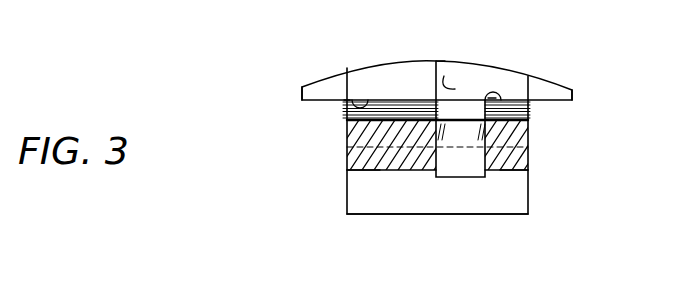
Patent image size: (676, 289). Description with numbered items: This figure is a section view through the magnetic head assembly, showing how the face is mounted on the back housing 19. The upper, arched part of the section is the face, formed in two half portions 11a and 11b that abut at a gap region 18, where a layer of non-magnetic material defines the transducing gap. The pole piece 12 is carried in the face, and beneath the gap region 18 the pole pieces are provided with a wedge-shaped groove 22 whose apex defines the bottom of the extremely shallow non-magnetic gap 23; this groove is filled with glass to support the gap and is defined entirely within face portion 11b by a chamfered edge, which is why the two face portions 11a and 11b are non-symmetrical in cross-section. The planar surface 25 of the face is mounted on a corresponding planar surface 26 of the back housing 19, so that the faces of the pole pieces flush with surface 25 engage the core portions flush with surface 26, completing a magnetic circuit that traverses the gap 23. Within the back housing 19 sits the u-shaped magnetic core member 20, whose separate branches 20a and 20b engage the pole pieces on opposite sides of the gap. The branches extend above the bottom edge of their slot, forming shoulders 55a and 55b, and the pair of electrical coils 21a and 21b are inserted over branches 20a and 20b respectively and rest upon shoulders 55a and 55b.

The face half portion 11a is at (302, 100).
The face half portion 11b is at (573, 100).
The pole piece 12 is at (360, 73).
The gap region 18 is at (429, 77).
The back housing 19 is at (377, 203).
The magnetic core member 20 is at (460, 138).
The core branch 20a is at (388, 111).
The core branch 20b is at (507, 100).
The electrical coil 21a is at (342, 110).
The electrical coil 21b is at (530, 117).
The wedge-shaped groove 22 is at (457, 88).
The non-magnetic gap 23 is at (440, 61).
The planar surface of face 25 is at (348, 102).
The planar surface of back housing 26 is at (492, 98).
The shoulder 55a is at (375, 166).
The shoulder 55b is at (505, 174).